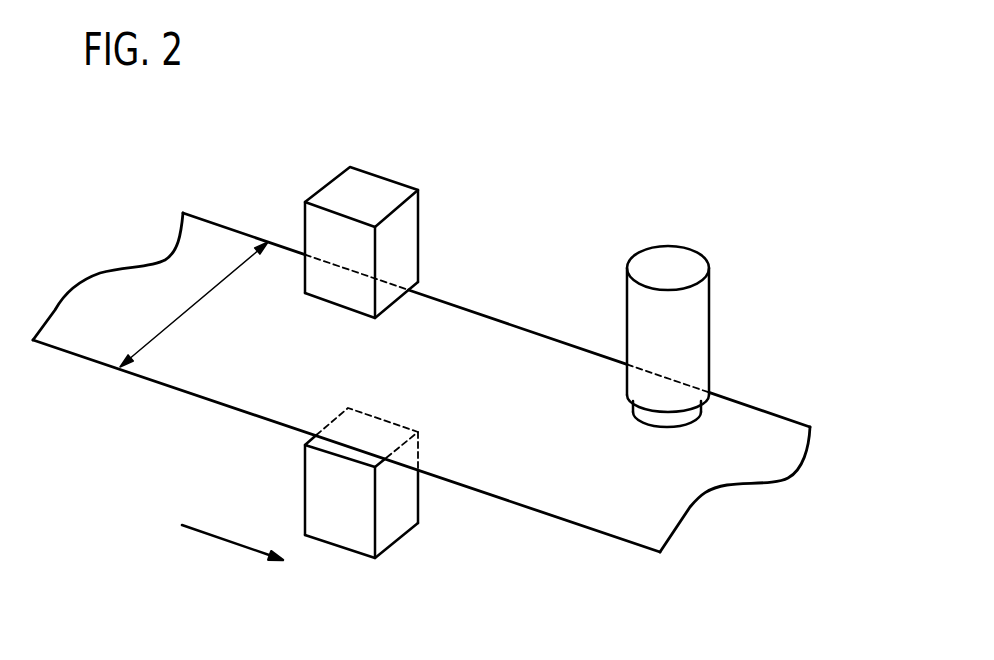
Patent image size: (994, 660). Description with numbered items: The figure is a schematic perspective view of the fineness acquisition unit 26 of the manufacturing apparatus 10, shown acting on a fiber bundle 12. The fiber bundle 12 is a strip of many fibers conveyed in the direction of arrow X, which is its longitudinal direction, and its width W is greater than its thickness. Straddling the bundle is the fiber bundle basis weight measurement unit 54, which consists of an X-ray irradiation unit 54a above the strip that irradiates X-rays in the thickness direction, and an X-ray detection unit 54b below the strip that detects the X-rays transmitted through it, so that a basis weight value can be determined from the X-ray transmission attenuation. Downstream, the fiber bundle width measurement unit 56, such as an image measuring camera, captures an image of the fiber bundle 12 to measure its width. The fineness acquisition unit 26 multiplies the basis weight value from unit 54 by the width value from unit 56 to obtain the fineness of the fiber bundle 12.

The manufacturing apparatus 10 is at (696, 84).
The fineness acquisition unit 26 is at (735, 84).
The fiber bundle 12 is at (600, 513).
The fiber bundle basis weight measurement unit 54 is at (391, 370).
The X-ray irradiation unit 54a is at (383, 192).
The X-ray detection unit 54b is at (358, 540).
The fiber bundle width measurement unit 56 is at (674, 262).